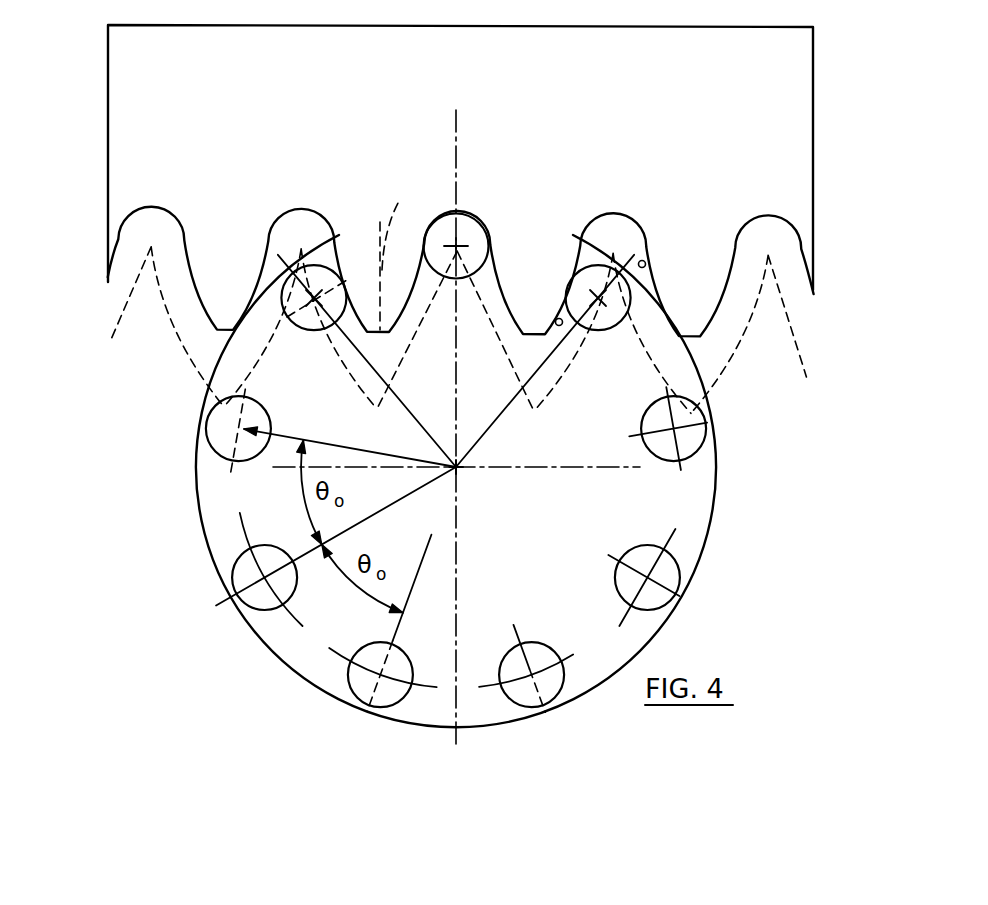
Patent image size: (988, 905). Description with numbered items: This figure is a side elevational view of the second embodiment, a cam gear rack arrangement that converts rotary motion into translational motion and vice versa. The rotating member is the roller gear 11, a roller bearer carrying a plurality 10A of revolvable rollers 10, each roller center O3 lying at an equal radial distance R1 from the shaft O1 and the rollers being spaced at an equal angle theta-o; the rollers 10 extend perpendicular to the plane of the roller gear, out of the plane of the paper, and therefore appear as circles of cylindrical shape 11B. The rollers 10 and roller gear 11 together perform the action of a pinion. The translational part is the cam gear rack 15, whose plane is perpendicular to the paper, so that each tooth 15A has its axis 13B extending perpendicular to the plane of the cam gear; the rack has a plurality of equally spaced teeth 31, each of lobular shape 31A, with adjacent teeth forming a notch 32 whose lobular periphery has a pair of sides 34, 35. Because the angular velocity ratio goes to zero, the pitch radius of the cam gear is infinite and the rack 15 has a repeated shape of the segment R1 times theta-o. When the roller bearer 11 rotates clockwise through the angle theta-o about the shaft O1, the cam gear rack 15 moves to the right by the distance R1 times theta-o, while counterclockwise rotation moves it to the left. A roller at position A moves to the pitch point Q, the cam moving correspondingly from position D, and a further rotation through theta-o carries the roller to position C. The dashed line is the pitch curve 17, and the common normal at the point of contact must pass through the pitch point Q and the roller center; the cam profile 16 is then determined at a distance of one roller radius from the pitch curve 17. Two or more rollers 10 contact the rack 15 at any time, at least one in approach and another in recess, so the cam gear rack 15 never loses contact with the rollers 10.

The rollers 10 is at (265, 612).
The plurality of rotatable rollers 10A is at (235, 630).
The roller gear 11 is at (210, 552).
The cylindrical shape 11B is at (398, 706).
The tooth axis 13B is at (406, 253).
The cam gear rack 15 is at (410, 133).
The tooth 15A is at (228, 305).
The cam profile 16 is at (257, 290).
The pitch curve 17 is at (183, 350).
The teeth 31 is at (826, 282).
The lobular shape 31A is at (737, 370).
The notch 32 is at (612, 205).
The side of lobular periphery 34 is at (557, 318).
The side of lobular periphery 35 is at (647, 265).
The roller position A is at (316, 328).
The roller position C is at (612, 330).
The cam gear position D is at (303, 230).
The pitch point Q is at (461, 237).
The shaft O1 is at (470, 478).
The roller center O3 is at (585, 600).
The radial distance R1 is at (350, 446).